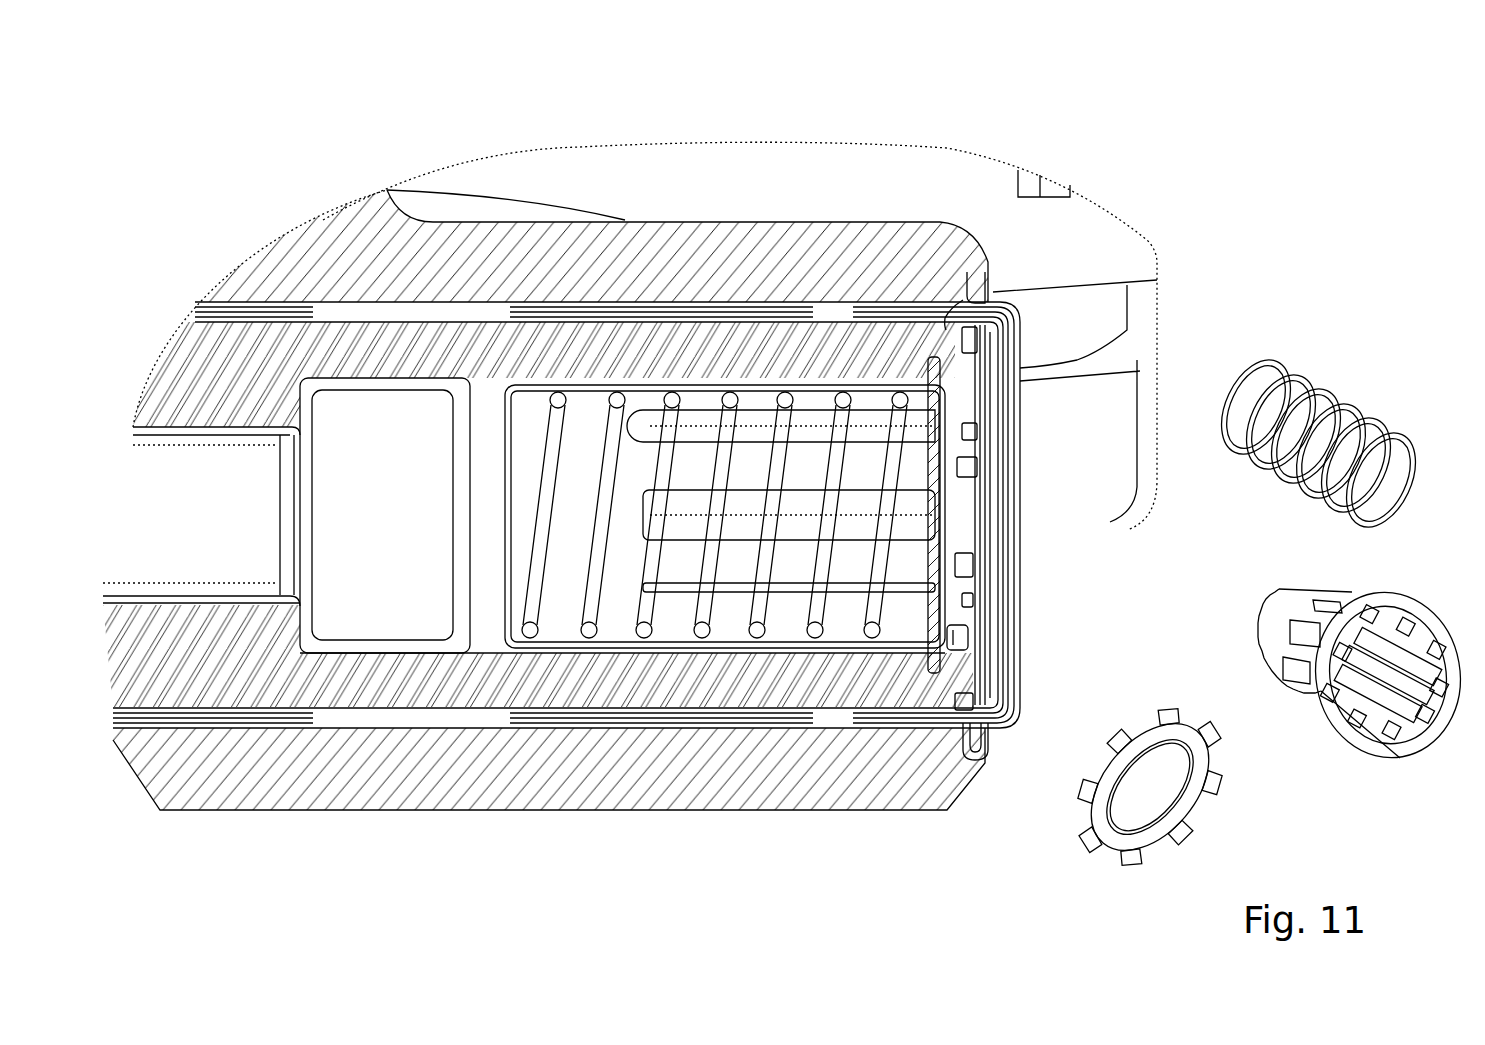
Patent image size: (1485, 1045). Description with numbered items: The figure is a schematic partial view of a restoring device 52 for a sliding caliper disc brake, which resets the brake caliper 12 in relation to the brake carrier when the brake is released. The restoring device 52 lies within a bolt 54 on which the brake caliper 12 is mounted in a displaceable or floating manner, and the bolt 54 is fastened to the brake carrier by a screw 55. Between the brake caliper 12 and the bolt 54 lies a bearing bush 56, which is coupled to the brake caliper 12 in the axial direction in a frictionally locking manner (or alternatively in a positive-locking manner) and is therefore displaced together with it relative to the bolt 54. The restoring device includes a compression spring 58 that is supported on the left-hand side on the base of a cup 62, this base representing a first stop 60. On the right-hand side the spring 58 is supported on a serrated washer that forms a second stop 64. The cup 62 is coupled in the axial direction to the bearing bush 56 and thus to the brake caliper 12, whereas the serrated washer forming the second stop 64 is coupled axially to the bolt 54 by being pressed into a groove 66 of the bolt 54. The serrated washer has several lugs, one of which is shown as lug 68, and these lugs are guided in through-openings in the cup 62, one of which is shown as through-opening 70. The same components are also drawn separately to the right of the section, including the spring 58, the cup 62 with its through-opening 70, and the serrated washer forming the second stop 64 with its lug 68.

The brake caliper 12 is at (840, 780).
The restoring device 52 is at (1000, 503).
The bolt 54 is at (583, 680).
The screw 55 is at (393, 430).
The bearing bush 56 is at (610, 305).
The compression spring 58 is at (717, 640).
The first stop 60 is at (497, 393).
The cup 62 is at (867, 390).
The second stop 64 is at (947, 627).
The groove 66 is at (973, 297).
The lug 68 is at (1160, 705).
The through-opening 70 is at (1283, 614).